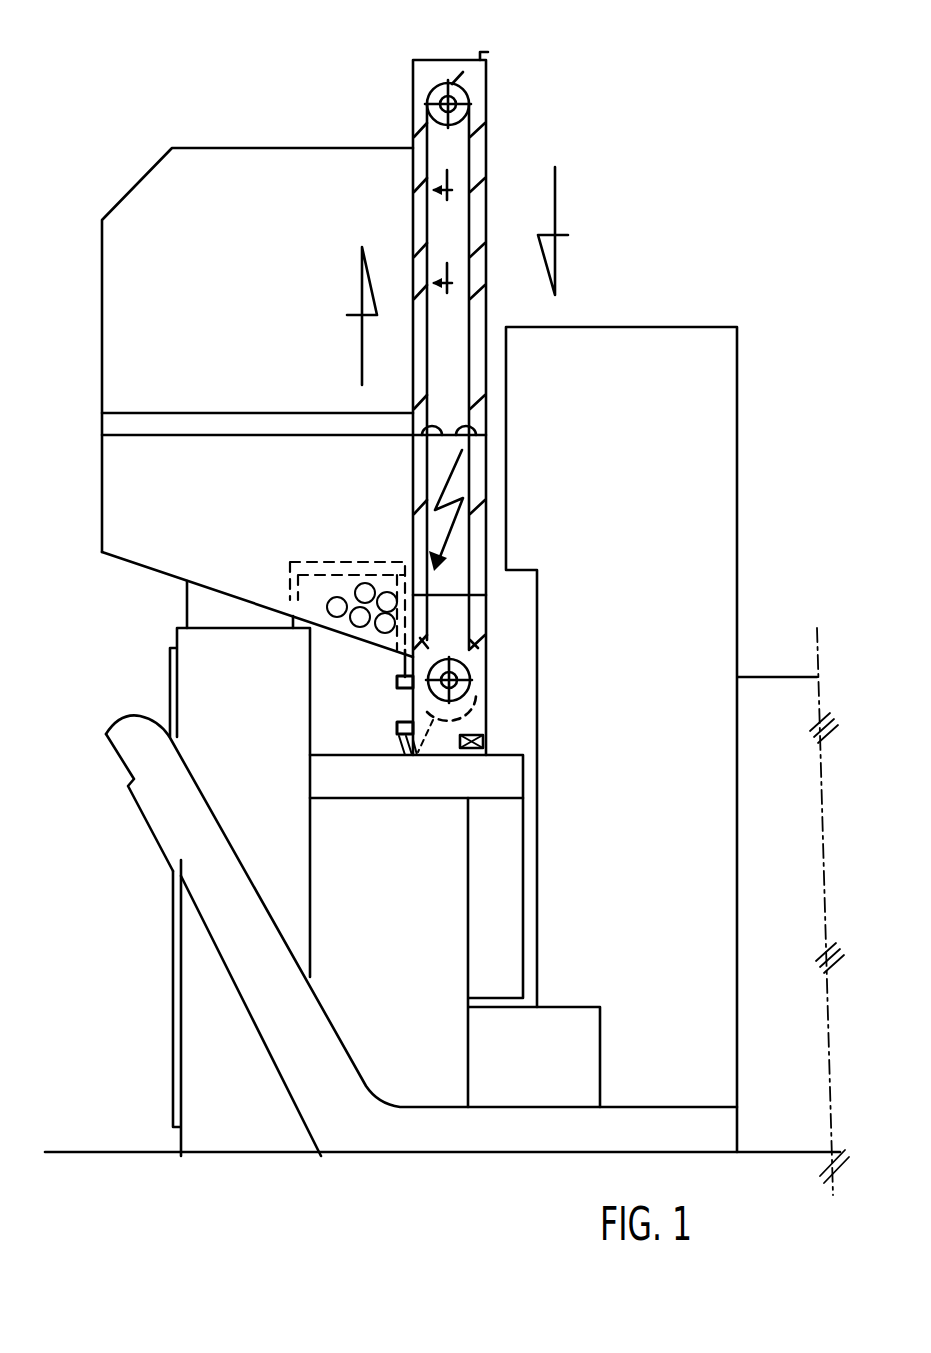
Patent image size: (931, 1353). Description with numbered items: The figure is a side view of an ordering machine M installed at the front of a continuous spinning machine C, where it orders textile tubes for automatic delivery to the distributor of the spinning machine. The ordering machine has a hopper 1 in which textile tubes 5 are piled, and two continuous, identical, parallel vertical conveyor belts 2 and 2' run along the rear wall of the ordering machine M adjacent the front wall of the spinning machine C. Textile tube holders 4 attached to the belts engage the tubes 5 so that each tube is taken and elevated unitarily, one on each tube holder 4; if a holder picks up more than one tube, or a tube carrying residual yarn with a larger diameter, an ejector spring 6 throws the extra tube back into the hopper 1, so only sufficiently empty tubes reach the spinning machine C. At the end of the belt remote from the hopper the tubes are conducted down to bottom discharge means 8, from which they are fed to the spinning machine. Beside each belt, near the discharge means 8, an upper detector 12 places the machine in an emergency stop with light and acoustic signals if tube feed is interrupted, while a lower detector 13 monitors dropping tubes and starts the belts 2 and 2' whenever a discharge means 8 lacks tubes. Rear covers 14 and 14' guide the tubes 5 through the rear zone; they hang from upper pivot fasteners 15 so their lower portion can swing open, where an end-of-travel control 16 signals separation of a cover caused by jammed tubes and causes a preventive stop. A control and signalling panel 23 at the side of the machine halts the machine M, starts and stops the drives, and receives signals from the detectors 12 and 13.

The ordering machine M is at (179, 124).
The hopper 1 is at (138, 265).
The conveyor belt 2 is at (410, 407).
The conveyor belt 2' is at (403, 66).
The textile tube holder 4 is at (473, 182).
The textile tube 5 is at (337, 603).
The ejector spring 6 is at (422, 247).
The bottom discharge means 8 is at (408, 758).
The upper detector 12 is at (397, 683).
The lower detector 13 is at (397, 728).
The rear cover 14 is at (559, 203).
The rear cover 14' is at (565, 202).
The upper pivot fastener 15 is at (484, 56).
The end-of-travel control 16 is at (483, 742).
The control and signalling panel 23 is at (457, 485).
The continuous spinning machine C is at (672, 348).